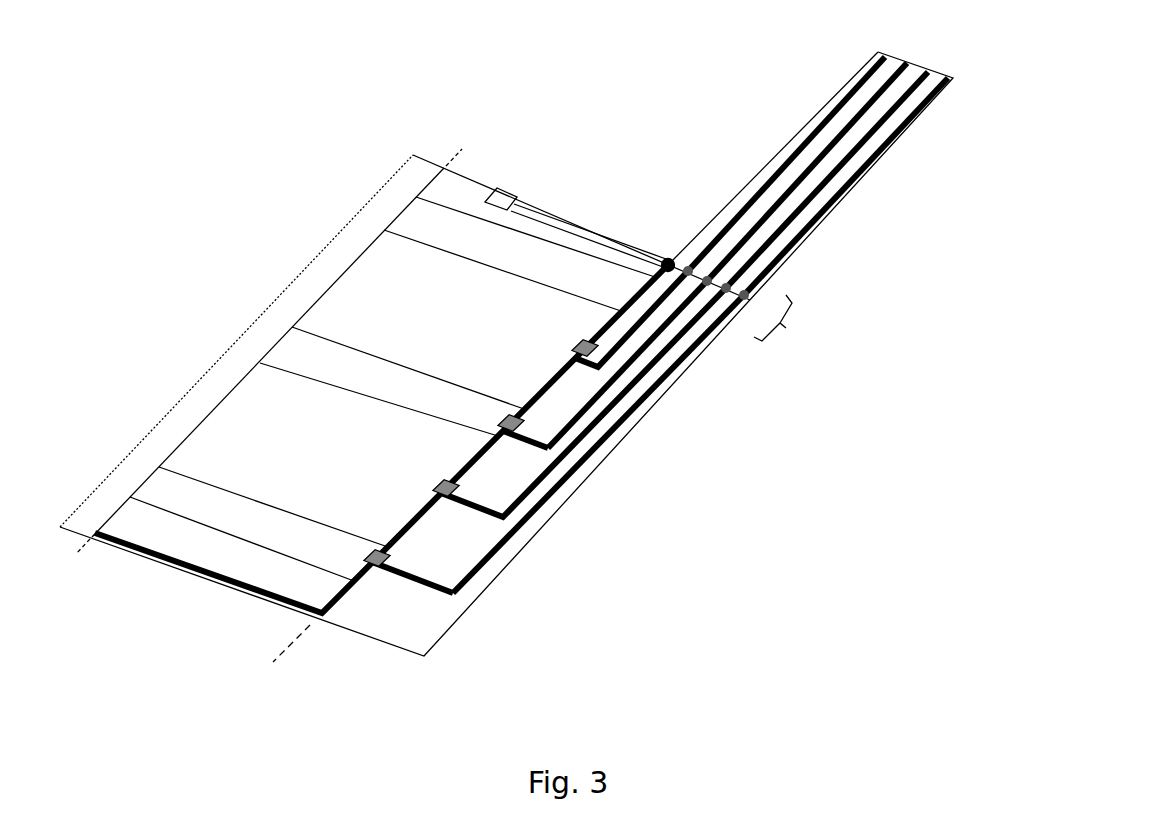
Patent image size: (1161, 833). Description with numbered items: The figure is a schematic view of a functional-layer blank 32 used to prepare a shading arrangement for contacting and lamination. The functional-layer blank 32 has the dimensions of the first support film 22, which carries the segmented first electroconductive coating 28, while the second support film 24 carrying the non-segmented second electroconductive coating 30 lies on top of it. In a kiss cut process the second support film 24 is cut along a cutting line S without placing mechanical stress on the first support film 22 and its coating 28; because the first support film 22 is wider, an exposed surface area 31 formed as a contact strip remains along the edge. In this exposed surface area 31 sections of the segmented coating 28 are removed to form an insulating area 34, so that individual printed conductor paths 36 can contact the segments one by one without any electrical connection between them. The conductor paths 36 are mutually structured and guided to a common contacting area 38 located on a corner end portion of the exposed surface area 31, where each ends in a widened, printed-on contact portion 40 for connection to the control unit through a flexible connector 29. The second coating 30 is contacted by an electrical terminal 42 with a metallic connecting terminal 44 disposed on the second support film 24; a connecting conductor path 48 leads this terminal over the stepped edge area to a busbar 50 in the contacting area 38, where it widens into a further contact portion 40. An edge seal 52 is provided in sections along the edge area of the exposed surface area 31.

The first support film 22 is at (430, 645).
The second support film 24 is at (410, 277).
The first electroconductive coating 28 is at (582, 343).
The flexible connector 29 is at (803, 170).
The second electroconductive coating 30 is at (360, 318).
The exposed surface area 31 is at (390, 607).
The functional-layer blank 32 is at (300, 124).
The insulating area 34 is at (633, 353).
The conductor paths 36 is at (665, 293).
The contacting area 38 is at (786, 326).
The contact portion 40 is at (689, 268).
The electrical terminal 42 is at (503, 197).
The connecting terminal 44 is at (510, 200).
The connecting conductor path 48 is at (610, 240).
The busbar 50 is at (666, 259).
The edge seal 52 is at (460, 463).
The cutting line S is at (285, 654).